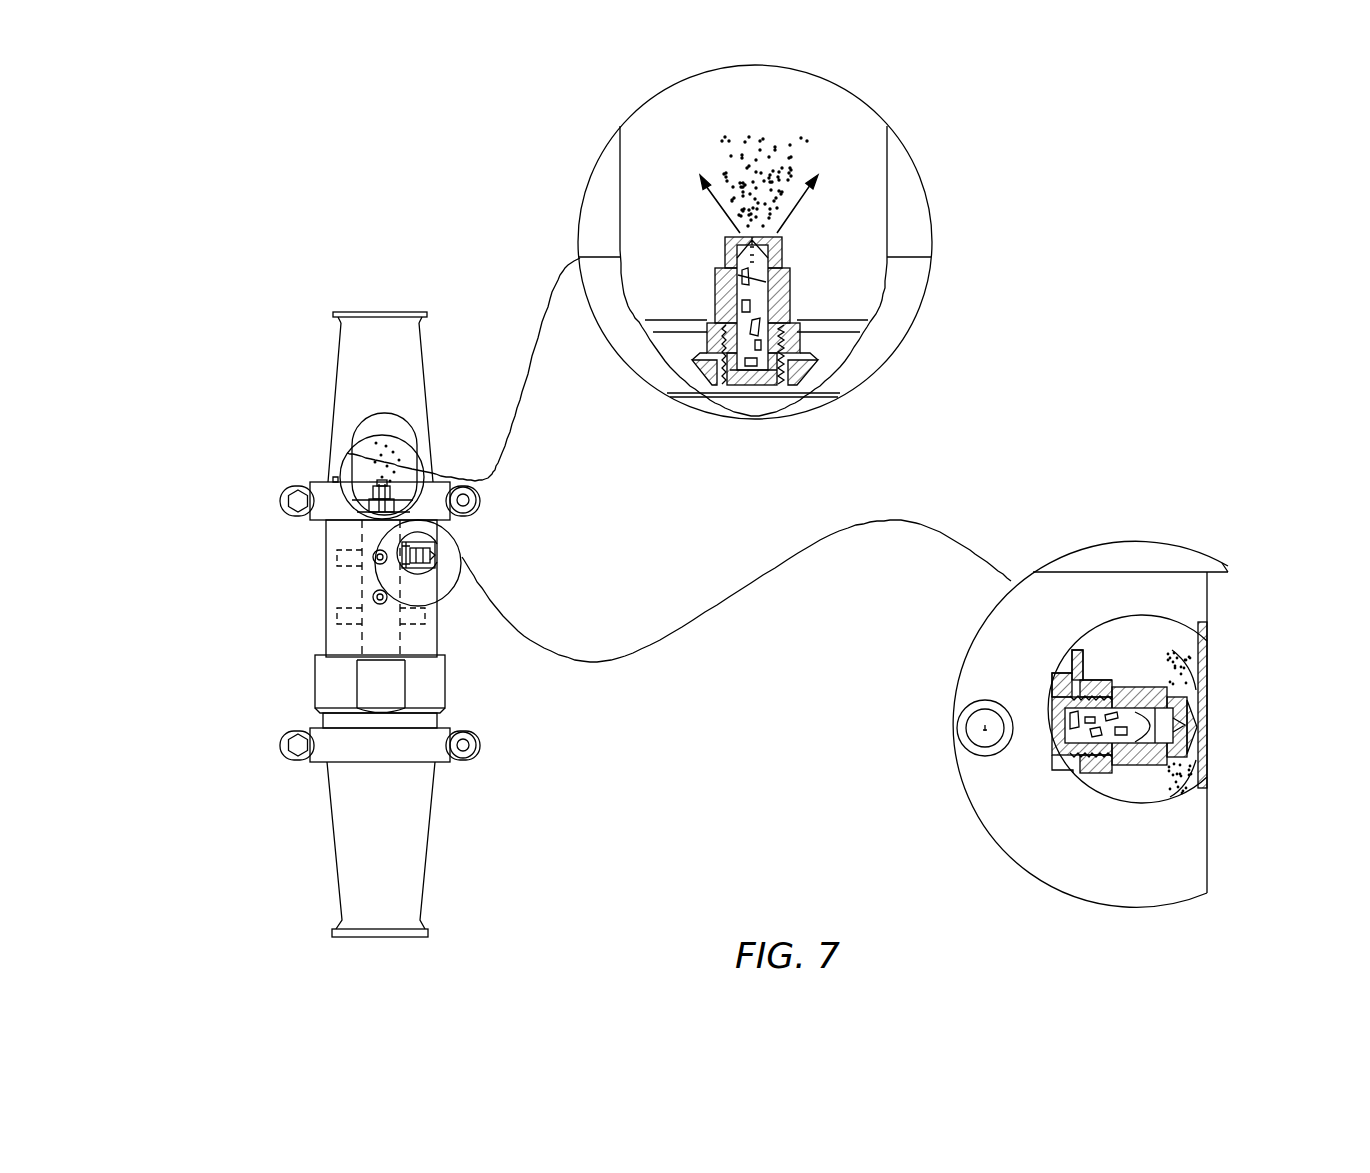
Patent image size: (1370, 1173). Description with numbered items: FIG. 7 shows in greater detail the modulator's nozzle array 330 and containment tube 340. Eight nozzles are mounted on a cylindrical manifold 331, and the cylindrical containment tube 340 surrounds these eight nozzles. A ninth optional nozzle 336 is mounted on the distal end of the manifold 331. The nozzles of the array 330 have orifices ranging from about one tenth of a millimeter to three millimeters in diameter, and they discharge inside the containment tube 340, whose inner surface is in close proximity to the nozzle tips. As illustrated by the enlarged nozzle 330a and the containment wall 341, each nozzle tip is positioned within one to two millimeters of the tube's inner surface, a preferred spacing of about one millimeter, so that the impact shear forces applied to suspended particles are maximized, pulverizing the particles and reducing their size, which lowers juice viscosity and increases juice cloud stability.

The nozzle array 330 is at (329, 570).
The nozzle 330a is at (1144, 669).
The cylindrical manifold 331 is at (344, 533).
The ninth optional nozzle 336 is at (782, 245).
The containment tube 340 is at (319, 551).
The containment wall 341 is at (1200, 673).